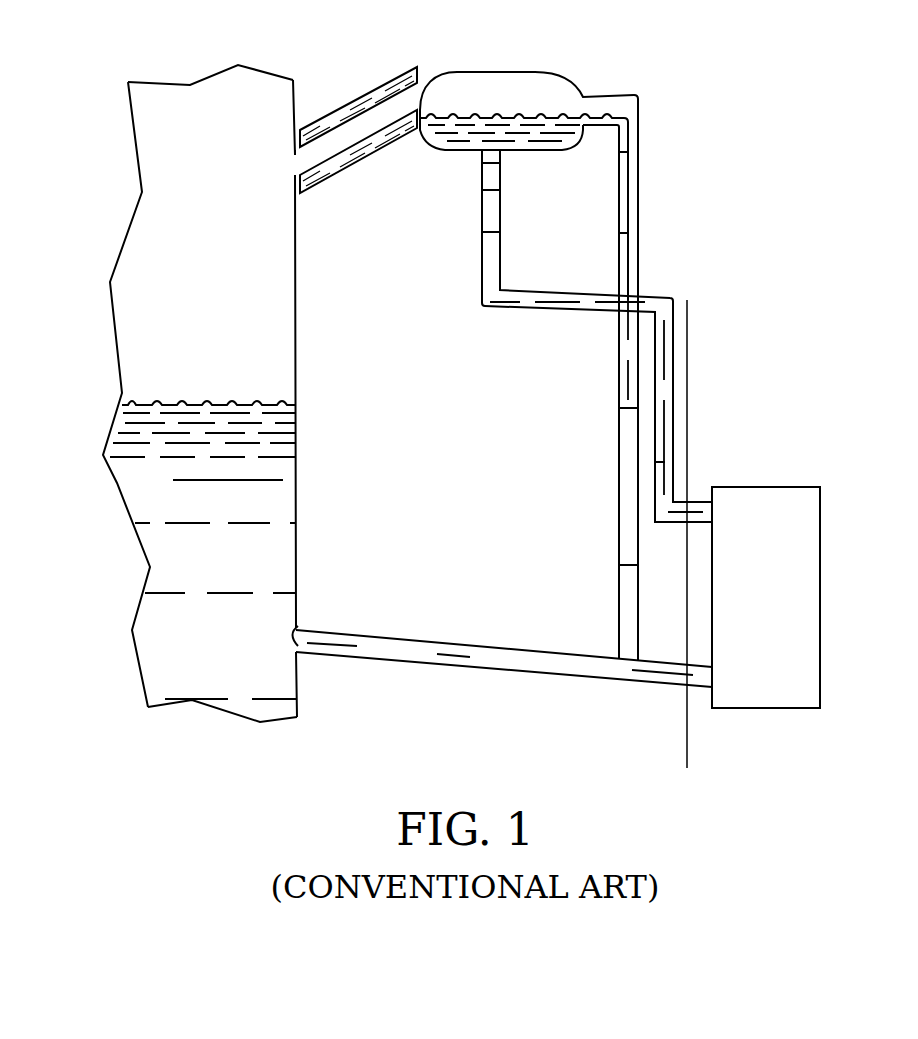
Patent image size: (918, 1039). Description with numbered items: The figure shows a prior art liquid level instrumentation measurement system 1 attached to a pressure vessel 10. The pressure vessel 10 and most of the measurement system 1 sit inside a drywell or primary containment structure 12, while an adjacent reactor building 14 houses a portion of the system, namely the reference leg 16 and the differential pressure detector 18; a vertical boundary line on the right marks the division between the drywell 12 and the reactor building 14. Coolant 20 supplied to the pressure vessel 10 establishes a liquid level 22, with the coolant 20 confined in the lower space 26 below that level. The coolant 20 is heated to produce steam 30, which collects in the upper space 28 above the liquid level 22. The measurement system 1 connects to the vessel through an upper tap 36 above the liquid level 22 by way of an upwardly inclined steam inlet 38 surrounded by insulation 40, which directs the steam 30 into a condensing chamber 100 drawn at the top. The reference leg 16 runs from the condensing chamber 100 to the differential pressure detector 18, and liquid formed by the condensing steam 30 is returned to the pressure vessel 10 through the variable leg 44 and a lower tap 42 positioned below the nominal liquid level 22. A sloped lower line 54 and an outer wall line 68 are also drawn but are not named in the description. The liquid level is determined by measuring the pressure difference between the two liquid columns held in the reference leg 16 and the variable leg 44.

The liquid level instrumentation measurement system 1 is at (714, 147).
The pressure vessel 10 is at (98, 373).
The drywell structure 12 is at (678, 743).
The reactor building 14 is at (697, 743).
The reference leg 16 is at (527, 288).
The differential pressure detector 18 is at (822, 558).
The coolant 20 is at (128, 503).
The liquid level 22 is at (184, 399).
The lower space 26 is at (135, 689).
The upper space 28 is at (165, 110).
The steam 30 is at (639, 196).
The upper tap 36 is at (292, 183).
The steam inlet 38 is at (335, 135).
The insulation 40 is at (352, 167).
The lower tap 42 is at (297, 630).
The variable leg 44 is at (432, 613).
The bottom pipe 54 is at (478, 668).
The outer pipe wall 68 is at (640, 250).
The condensing chamber 100 is at (495, 70).